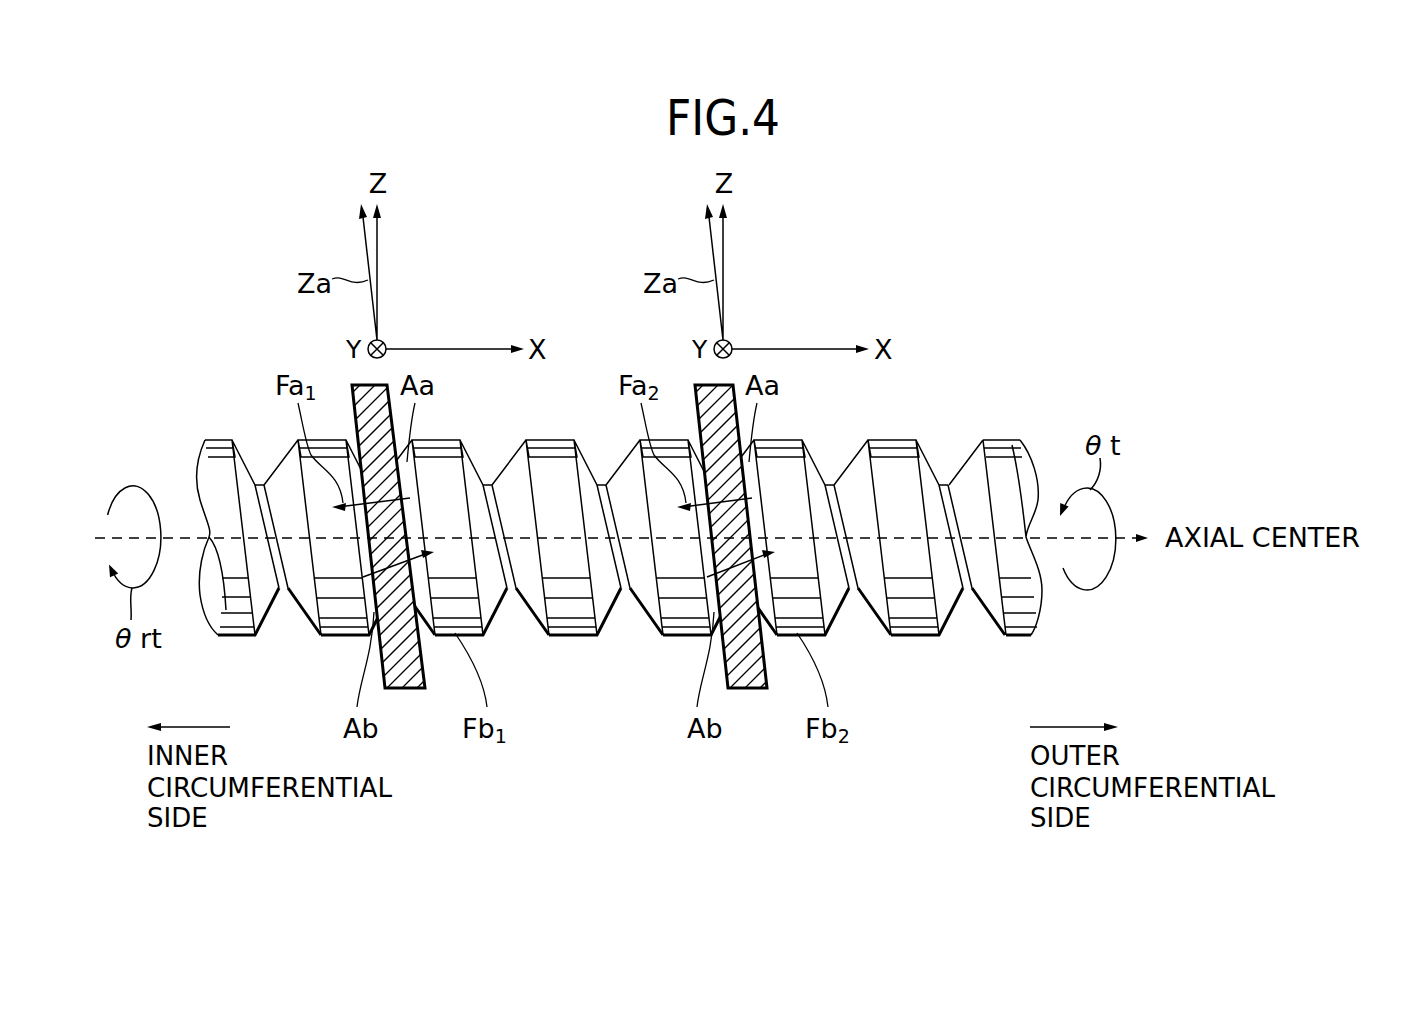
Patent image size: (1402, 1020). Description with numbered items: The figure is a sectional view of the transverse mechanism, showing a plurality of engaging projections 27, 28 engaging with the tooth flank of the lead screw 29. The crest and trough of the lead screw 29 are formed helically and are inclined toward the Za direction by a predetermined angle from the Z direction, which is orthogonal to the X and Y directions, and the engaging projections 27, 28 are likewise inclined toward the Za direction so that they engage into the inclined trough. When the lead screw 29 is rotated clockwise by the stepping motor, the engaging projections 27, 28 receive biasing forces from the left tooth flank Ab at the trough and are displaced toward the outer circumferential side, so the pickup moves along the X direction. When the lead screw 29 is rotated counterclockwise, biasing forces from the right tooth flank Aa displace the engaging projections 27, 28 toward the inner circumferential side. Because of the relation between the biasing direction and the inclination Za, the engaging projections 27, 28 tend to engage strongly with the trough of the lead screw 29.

The engaging projection 27 is at (408, 690).
The engaging projection 28 is at (748, 690).
The lead screw 29 is at (1002, 450).